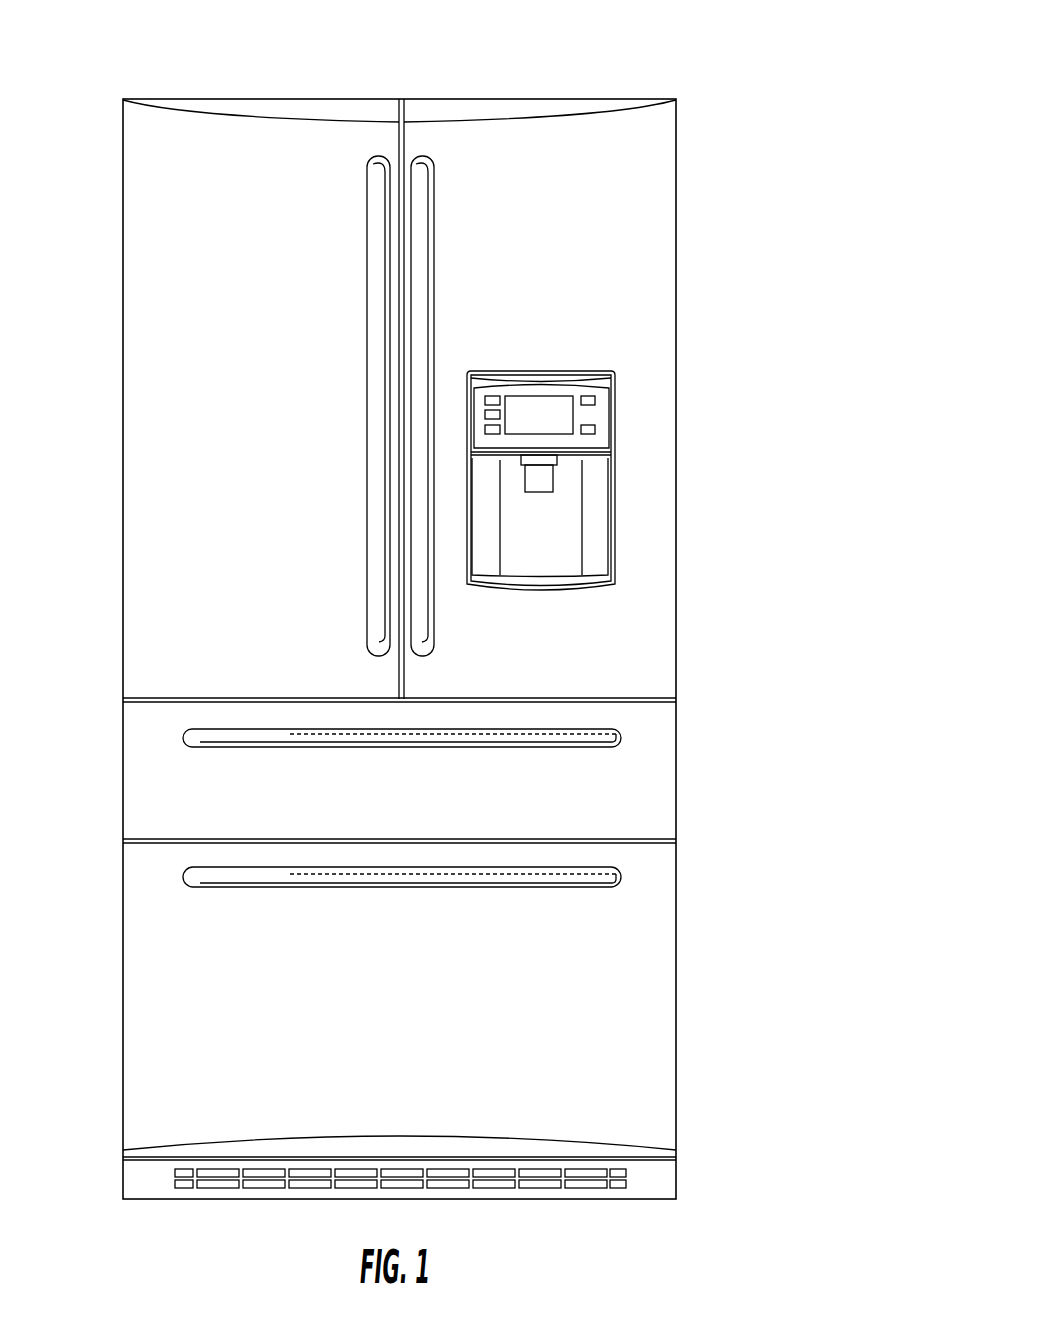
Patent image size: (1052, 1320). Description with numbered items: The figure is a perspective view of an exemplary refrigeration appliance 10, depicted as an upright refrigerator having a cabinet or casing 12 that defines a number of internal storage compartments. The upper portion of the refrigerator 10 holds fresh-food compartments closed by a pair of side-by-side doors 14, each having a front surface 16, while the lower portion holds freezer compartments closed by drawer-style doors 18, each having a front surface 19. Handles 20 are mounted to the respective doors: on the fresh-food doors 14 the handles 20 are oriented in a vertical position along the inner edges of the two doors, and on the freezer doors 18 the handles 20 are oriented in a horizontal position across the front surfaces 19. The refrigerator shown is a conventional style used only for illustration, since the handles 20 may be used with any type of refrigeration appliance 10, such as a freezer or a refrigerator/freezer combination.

The refrigeration appliance 10 is at (655, 55).
The cabinet 12 is at (677, 214).
The doors 14 is at (136, 610).
The front surface 16 is at (285, 378).
The doors 18 is at (652, 783).
The front surface 19 is at (410, 793).
The handles 20 is at (426, 200).